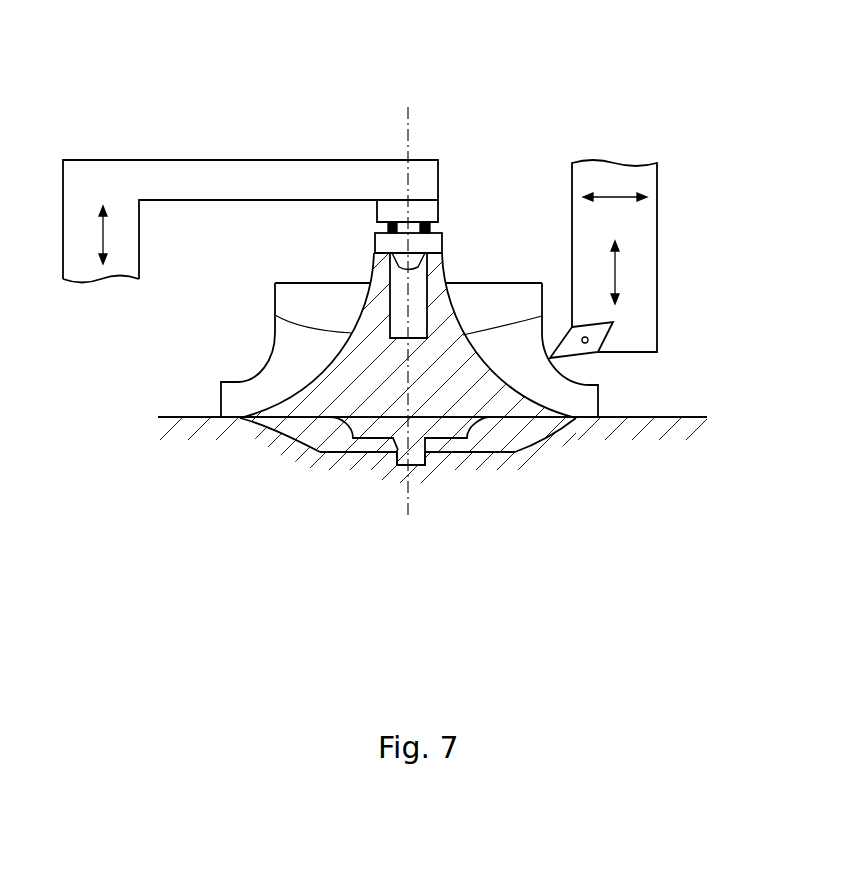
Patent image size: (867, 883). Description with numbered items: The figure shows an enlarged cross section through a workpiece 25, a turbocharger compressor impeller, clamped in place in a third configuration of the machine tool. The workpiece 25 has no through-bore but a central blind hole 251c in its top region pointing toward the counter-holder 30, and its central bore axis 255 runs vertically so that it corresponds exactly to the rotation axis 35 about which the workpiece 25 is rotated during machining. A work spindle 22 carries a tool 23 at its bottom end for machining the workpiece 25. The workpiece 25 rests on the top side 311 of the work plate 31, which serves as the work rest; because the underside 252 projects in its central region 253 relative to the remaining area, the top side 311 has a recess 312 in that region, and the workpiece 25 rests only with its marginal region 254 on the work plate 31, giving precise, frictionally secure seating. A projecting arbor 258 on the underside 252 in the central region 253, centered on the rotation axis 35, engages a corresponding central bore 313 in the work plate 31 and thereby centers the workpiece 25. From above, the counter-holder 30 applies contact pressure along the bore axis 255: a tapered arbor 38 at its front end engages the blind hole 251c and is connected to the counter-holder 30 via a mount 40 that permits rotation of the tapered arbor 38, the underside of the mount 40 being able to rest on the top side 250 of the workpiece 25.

The counter-holder 30 is at (278, 173).
The rotation axis 35 is at (410, 128).
The mount 40 is at (440, 228).
The tapered arbor 38 is at (443, 265).
The work spindle 22 is at (642, 288).
The tool 23 is at (605, 358).
The workpiece 25 is at (463, 450).
The top side of the workpiece 250 is at (370, 252).
The central blind hole 251c is at (396, 326).
The work plate 31 is at (402, 529).
The top side of the work plate 311 is at (192, 417).
The recess in the central region 312 is at (485, 452).
The central bore 313 is at (432, 465).
The underside of the workpiece 252 is at (547, 420).
The central region 253 is at (350, 450).
The marginal region 254 is at (240, 420).
The central bore axis 255 is at (410, 497).
The projecting arbor 258 is at (432, 453).